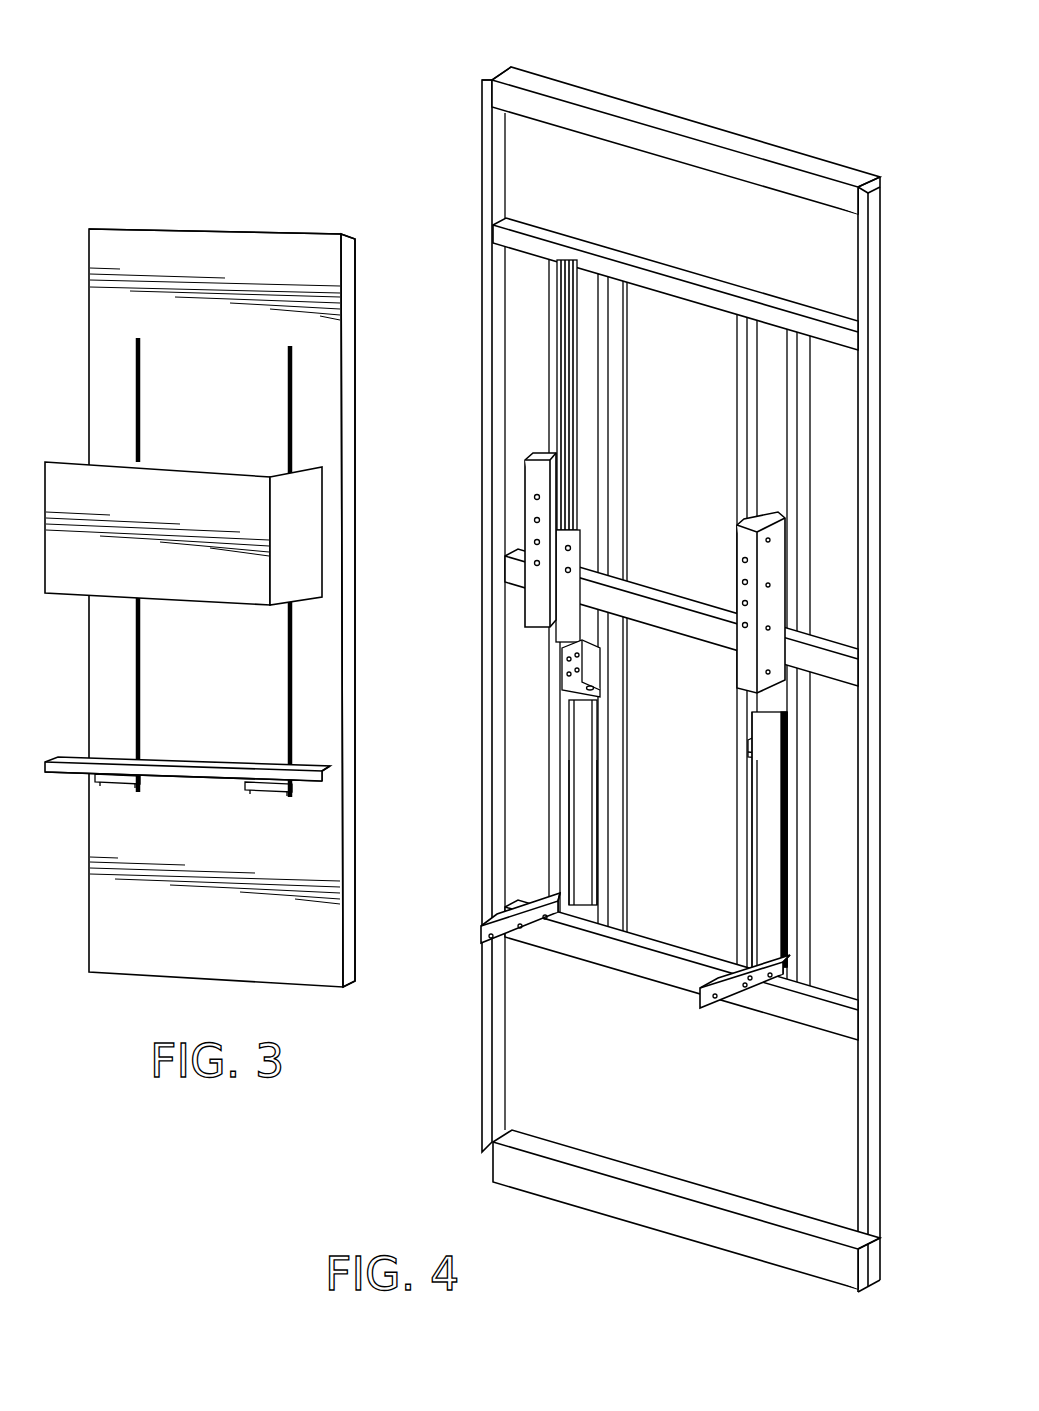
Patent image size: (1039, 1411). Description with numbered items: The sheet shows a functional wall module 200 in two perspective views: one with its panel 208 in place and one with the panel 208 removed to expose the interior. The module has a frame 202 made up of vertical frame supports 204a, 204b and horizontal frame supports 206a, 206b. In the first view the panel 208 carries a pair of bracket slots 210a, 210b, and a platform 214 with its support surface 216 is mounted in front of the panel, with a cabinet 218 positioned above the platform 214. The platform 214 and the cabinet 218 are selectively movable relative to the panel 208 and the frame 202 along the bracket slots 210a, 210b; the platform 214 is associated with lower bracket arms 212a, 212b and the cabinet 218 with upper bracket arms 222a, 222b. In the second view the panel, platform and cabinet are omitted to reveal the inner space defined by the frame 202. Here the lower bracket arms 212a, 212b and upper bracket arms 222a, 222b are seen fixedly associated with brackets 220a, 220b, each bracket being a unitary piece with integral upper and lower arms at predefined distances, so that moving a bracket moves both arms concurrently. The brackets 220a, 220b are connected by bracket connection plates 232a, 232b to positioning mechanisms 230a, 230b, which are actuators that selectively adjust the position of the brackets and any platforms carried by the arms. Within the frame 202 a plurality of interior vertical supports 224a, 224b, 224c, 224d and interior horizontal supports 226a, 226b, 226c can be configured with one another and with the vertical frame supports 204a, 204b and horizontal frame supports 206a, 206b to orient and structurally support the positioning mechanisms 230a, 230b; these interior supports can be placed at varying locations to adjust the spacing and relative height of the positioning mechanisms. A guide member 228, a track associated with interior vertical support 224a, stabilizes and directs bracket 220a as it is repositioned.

In FIG. 3, the functional wall module 200 is at (246, 118).
In FIG. 3, the frame 202 is at (80, 222).
In FIG. 4, the frame 202 is at (462, 72).
In FIG. 4, the vertical frame support 204a is at (485, 380).
In FIG. 3, the vertical frame support 204b is at (350, 296).
In FIG. 4, the vertical frame support 204b is at (878, 463).
In FIG. 3, the horizontal frame support 206a is at (290, 230).
In FIG. 4, the horizontal frame support 206a is at (686, 152).
In FIG. 4, the horizontal frame support 206b is at (636, 1212).
In FIG. 3, the panel 208 is at (152, 245).
In FIG. 3, the bracket slot 210a is at (140, 352).
In FIG. 3, the bracket slot 210b is at (290, 415).
In FIG. 3, the lower bracket arm 212a is at (118, 782).
In FIG. 4, the lower bracket arm 212a is at (476, 945).
In FIG. 3, the lower bracket arm 212b is at (272, 790).
In FIG. 4, the lower bracket arm 212b is at (742, 1014).
In FIG. 3, the platform 214 is at (192, 790).
In FIG. 3, the shelf front edge 216 is at (195, 754).
In FIG. 3, the cabinet 218 is at (188, 509).
In FIG. 4, the bracket 220a is at (560, 808).
In FIG. 4, the bracket 220b is at (783, 865).
In FIG. 4, the upper bracket arm 222a is at (520, 495).
In FIG. 4, the upper bracket arm 222b is at (731, 581).
In FIG. 4, the interior vertical support 224a is at (577, 363).
In FIG. 4, the interior vertical support 224b is at (615, 437).
In FIG. 4, the interior vertical support 224c is at (748, 402).
In FIG. 4, the interior vertical support 224d is at (800, 455).
In FIG. 4, the interior horizontal support 226a is at (680, 292).
In FIG. 4, the interior horizontal support 226b is at (688, 622).
In FIG. 4, the interior horizontal support 226c is at (648, 968).
In FIG. 4, the guide member 228 is at (588, 470).
In FIG. 4, the positioning mechanism 230a is at (585, 910).
In FIG. 4, the positioning mechanism 230b is at (772, 830).
In FIG. 4, the bracket connection plate 232a is at (578, 662).
In FIG. 4, the bracket connection plate 232b is at (760, 750).